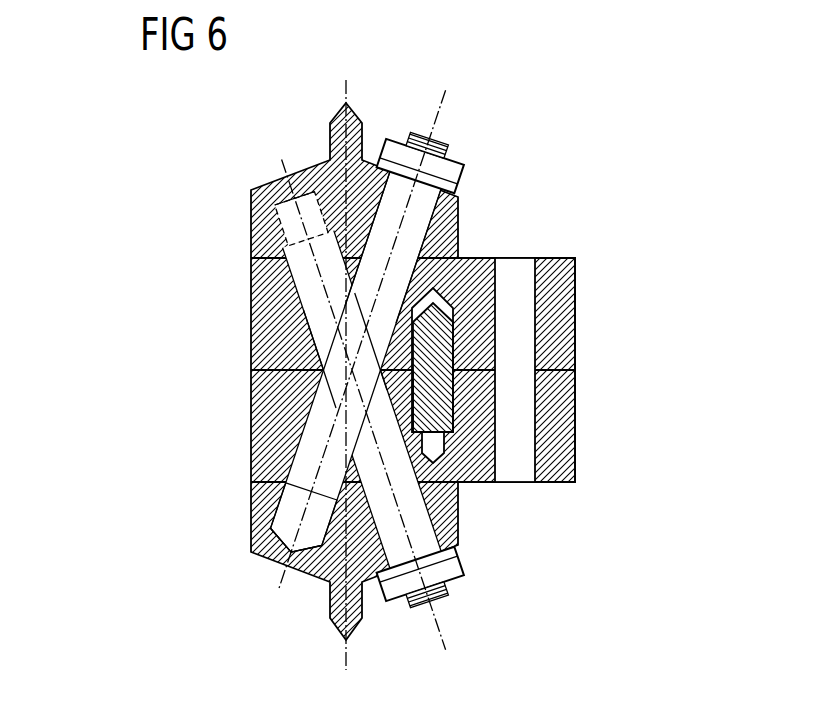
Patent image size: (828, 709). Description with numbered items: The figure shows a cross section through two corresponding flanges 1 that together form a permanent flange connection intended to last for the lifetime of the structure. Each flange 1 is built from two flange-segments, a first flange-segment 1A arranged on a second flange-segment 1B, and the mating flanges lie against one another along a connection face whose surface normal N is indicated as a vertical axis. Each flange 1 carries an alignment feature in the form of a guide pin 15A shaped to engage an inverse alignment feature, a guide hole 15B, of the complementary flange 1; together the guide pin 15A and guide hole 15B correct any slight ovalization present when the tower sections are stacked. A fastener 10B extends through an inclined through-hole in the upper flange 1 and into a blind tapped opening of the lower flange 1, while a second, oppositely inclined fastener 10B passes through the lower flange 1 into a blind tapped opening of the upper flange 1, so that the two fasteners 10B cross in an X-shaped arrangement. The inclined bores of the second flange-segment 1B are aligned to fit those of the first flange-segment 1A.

The flange 1 is at (391, 375).
The first flange-segment 1A is at (307, 172).
The second flange-segment 1B is at (568, 273).
The fastener 10B is at (369, 360).
The guide pin 15A is at (442, 362).
The guide hole 15B is at (450, 308).
The surface normal N is at (345, 658).